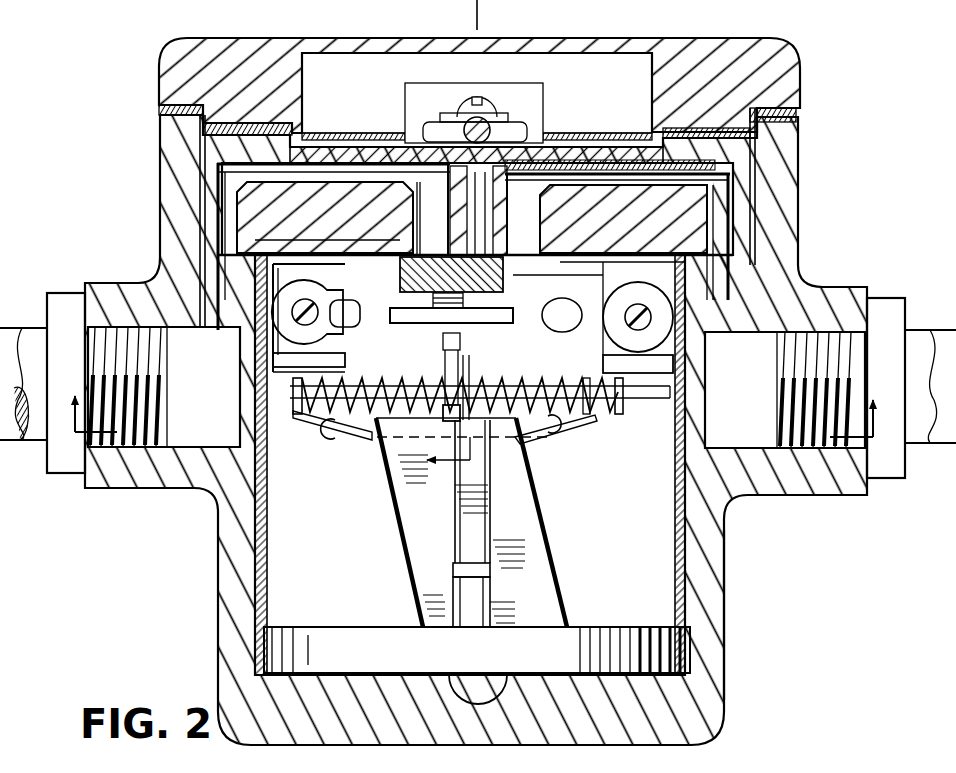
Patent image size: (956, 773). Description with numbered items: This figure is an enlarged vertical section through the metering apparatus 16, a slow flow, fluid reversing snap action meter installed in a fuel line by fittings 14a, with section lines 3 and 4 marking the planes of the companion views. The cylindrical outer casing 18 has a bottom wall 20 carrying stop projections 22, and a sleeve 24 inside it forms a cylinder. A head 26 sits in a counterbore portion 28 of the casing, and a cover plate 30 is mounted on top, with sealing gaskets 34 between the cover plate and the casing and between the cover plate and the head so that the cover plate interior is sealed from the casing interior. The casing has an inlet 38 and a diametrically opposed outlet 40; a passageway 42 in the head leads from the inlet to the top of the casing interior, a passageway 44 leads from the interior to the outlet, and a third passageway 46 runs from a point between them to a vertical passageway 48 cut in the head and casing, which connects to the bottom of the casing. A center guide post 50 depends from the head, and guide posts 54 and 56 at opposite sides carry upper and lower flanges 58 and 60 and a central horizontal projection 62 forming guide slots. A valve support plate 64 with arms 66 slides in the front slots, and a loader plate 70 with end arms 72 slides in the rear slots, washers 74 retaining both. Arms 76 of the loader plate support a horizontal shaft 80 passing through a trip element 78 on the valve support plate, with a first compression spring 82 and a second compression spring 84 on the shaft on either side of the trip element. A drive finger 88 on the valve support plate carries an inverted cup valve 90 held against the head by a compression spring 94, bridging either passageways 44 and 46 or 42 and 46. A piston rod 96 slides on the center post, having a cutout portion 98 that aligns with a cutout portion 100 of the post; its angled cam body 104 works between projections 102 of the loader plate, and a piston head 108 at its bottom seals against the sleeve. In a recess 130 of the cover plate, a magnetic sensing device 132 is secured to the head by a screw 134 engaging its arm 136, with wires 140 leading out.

The section line 3— 3 is at (473, 412).
The section line 4— 4 is at (463, 247).
The fittings 14a is at (66, 302).
The metering apparatus 16 is at (728, 682).
The outer casing 18 is at (703, 577).
The bottom wall 20 is at (650, 735).
The stop projections 22 is at (318, 672).
The sleeve 24 is at (262, 550).
The head 26 is at (745, 203).
The counterbore portion 28 is at (192, 185).
The cover plate 30 is at (272, 52).
The sealing gaskets 34 is at (745, 135).
The inlet 38 is at (190, 437).
The outlet 40 is at (758, 450).
The passageway 42 is at (338, 176).
The passageway 44 is at (617, 184).
The third passageway 46 is at (486, 176).
The vertical passageway 48 is at (468, 675).
The center guide post 50 is at (474, 372).
The guide post 54 is at (283, 363).
The guide post 56 is at (665, 366).
The upper flange 58 is at (285, 262).
The lower flange 60 is at (275, 380).
The central horizontal projection 62 is at (318, 302).
The valve support plate 64 is at (382, 347).
The arms 66 is at (562, 315).
The loader plate 70 is at (333, 422).
The end arms 72 is at (604, 288).
The washers 74 is at (290, 325).
The arms 76 is at (295, 414).
The trip element 78 is at (446, 420).
The horizontal shaft 80 is at (657, 400).
The first compression spring 82 is at (400, 385).
The second compression spring 84 is at (586, 414).
The drive finger 88 is at (455, 330).
The inverted cup valve 90 is at (405, 276).
The compression spring 94 is at (463, 306).
The piston rod 96 is at (463, 520).
The cutout portion 98 is at (482, 573).
The cutout portion 100 is at (470, 593).
The projections 102 is at (368, 430).
The angled cam body 104 is at (560, 572).
The piston head 108 is at (652, 643).
The recess 130 is at (357, 64).
The magnetic sensing device 132 is at (545, 118).
The screw 134 is at (483, 110).
The arm 136 is at (452, 118).
The wires 140 is at (512, 126).